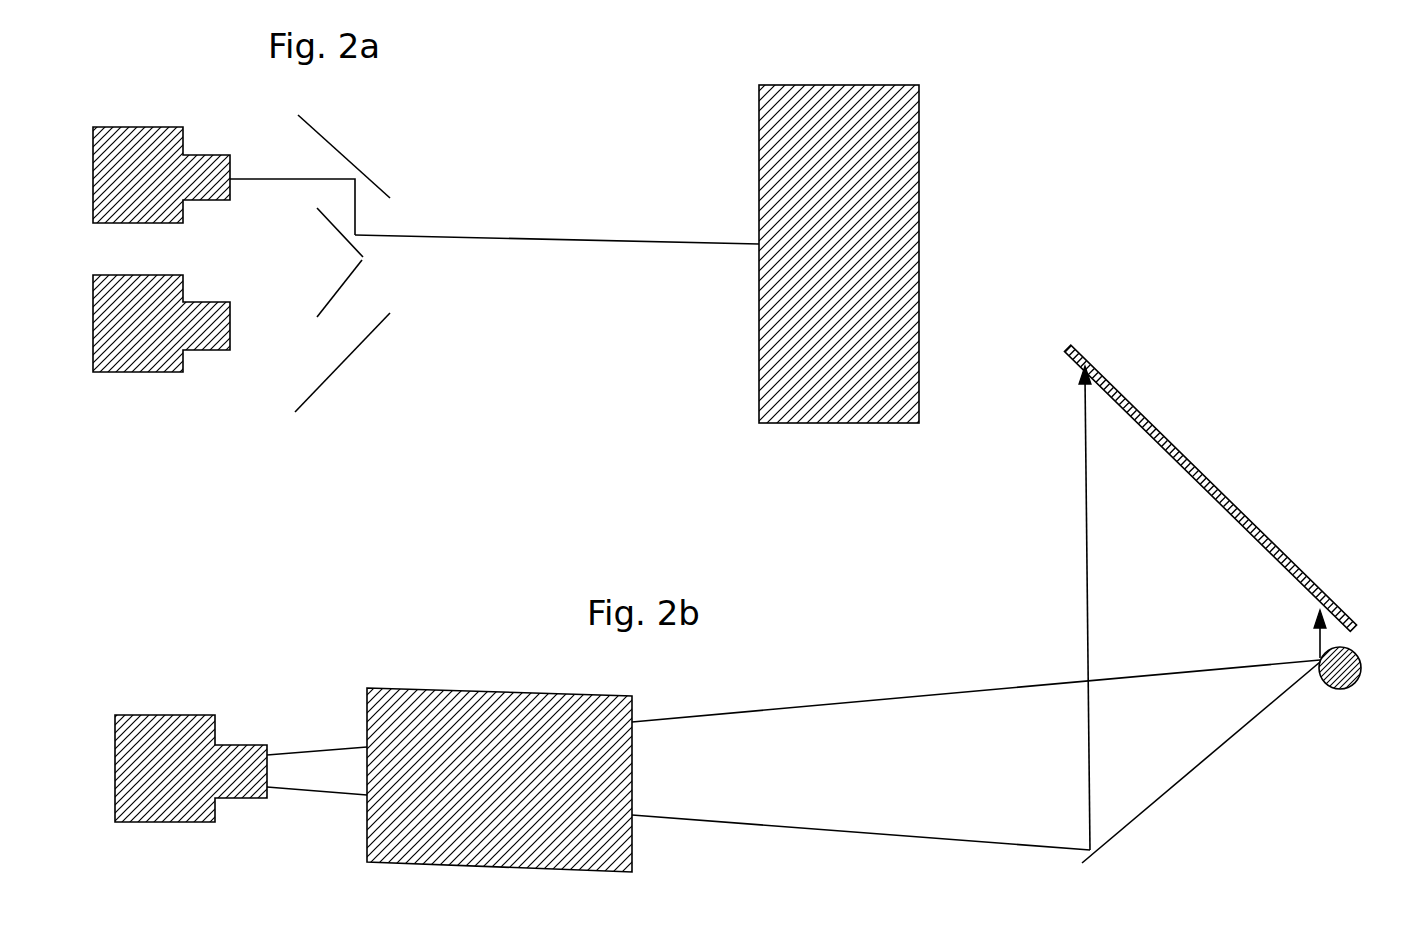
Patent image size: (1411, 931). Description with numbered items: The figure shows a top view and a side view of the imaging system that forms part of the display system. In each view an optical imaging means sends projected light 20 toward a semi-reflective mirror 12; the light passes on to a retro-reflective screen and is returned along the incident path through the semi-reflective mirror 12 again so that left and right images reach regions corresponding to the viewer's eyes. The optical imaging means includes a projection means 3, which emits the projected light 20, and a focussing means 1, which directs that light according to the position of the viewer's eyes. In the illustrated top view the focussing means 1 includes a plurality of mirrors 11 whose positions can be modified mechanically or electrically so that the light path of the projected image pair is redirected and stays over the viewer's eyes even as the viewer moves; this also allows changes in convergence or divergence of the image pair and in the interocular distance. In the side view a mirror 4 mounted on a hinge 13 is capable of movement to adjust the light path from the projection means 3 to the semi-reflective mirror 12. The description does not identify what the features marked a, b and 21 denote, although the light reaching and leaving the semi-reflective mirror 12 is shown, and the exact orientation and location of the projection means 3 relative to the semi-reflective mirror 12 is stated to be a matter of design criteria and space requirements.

In FIG. 2a, the light source a is at (153, 126).
In FIG. 2a, the light source b is at (138, 372).
In FIG. 2b, the focussing means 1 is at (448, 688).
In FIG. 2b, the projection means 3 is at (170, 822).
In FIG. 2b, the mirror 4 is at (1215, 760).
In FIG. 2a, the mirrors 11 is at (357, 162).
In FIG. 2a, the semi-reflective mirror 12 is at (919, 200).
In FIG. 2b, the semi-reflective mirror 12 is at (1232, 498).
In FIG. 2b, the hinge 13 is at (1352, 688).
In FIG. 2a, the projected light 20 is at (295, 178).
In FIG. 2b, the projected light 20 is at (322, 745).
In FIG. 2a, the deflected light beam 21 is at (468, 237).
In FIG. 2b, the deflected light beam 21 is at (1087, 553).